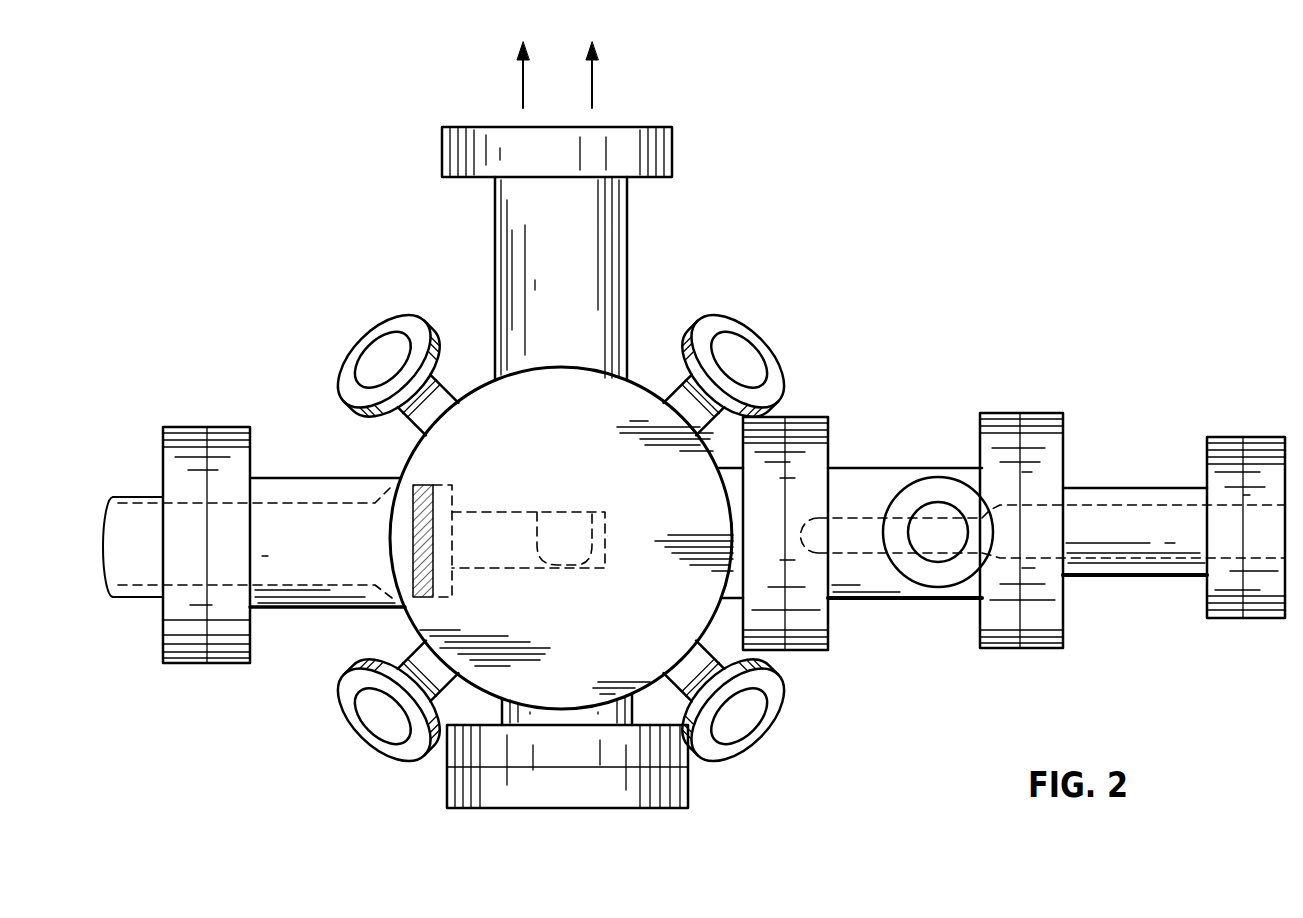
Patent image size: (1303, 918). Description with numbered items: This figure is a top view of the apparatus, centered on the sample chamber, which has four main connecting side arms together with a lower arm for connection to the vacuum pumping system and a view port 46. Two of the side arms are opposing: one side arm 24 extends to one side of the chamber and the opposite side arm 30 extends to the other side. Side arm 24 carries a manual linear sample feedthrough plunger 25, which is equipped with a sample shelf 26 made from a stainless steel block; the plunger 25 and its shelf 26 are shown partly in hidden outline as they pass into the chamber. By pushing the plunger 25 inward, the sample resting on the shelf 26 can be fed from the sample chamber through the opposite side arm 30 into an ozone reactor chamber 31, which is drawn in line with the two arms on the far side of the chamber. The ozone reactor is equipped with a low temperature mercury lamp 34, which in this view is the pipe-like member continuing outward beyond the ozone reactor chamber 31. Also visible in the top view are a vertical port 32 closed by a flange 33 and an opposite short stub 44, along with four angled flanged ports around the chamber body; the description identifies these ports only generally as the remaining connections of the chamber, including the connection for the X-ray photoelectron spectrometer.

The side arm 24 is at (360, 600).
The manual linear sample feedthrough plunger 25 is at (320, 583).
The sample shelf 26 is at (570, 533).
The side arm 30 is at (723, 590).
The ozone reactor chamber 31 is at (858, 480).
The top vent pipe 32 is at (593, 267).
The top flange 33 is at (557, 109).
The low temperature mercury lamp 34 is at (1187, 522).
The bottom drain stub 44 is at (577, 717).
The view port 46 is at (527, 792).